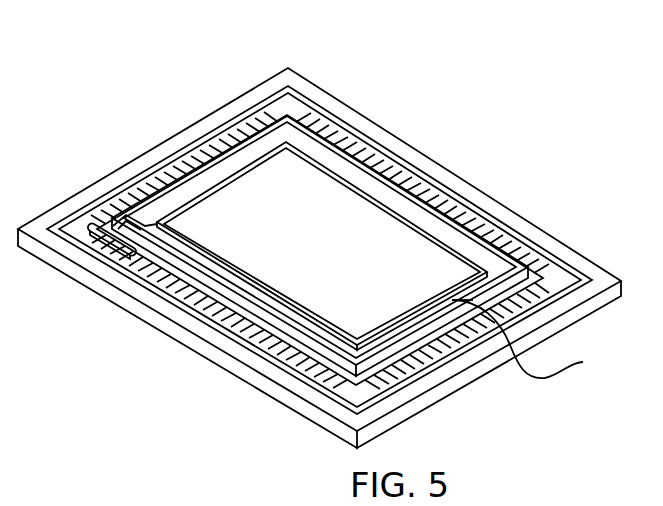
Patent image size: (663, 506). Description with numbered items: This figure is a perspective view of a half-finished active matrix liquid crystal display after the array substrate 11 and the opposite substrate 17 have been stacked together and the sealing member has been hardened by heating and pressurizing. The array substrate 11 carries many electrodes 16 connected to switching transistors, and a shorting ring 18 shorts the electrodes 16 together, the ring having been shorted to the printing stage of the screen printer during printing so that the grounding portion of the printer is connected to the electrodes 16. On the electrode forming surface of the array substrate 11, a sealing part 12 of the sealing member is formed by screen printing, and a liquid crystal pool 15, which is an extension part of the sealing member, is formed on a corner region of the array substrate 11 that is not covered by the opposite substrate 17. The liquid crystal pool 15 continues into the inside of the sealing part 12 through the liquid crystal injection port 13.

The array substrate 11 is at (142, 320).
The sealing part 12 is at (363, 195).
The liquid crystal injection port 13 is at (127, 218).
The liquid crystal pool 15 is at (98, 238).
The electrodes 16 is at (248, 368).
The opposite substrate 17 is at (534, 339).
The shorting ring 18 is at (328, 106).